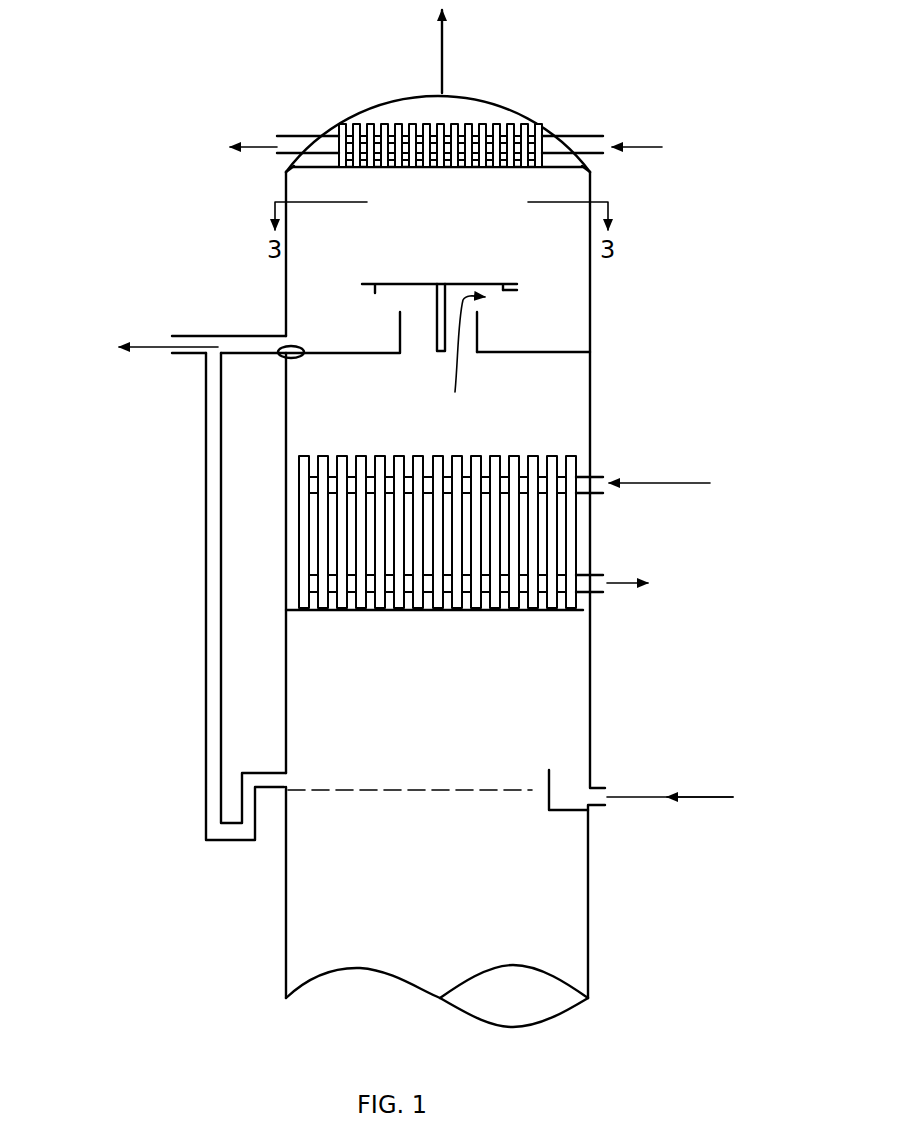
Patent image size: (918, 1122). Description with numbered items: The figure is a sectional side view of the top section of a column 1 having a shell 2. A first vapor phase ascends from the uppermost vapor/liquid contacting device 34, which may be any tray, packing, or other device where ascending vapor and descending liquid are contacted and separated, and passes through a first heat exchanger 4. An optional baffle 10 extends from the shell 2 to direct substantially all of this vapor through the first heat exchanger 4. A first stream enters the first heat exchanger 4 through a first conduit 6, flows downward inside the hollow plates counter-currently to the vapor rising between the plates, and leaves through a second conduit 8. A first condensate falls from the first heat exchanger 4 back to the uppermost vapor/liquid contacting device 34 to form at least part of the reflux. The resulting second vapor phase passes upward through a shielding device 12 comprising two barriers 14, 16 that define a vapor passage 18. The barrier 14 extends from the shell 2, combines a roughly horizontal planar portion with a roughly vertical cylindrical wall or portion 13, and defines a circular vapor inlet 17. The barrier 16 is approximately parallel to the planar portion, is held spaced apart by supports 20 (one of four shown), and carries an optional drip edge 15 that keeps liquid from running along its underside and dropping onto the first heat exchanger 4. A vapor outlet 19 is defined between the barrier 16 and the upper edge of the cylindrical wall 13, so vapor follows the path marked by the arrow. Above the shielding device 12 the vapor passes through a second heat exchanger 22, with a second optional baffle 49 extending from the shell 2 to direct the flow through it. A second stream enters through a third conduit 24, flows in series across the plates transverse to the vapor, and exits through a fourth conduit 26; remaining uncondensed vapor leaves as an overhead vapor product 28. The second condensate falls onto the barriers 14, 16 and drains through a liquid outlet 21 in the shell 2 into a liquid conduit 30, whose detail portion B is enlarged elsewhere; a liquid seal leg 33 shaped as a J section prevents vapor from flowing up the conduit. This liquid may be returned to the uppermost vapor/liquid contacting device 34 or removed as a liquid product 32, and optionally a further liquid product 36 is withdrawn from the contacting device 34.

The column 1 is at (672, 852).
The shell 2 is at (588, 897).
The first heat exchanger 4 is at (502, 640).
The first conduit 6 is at (598, 475).
The second conduit 8 is at (598, 573).
The baffle 10 is at (287, 608).
The shielding device 12 is at (609, 325).
The cylindrical wall or portion 13 is at (400, 317).
The barrier 14 is at (547, 352).
The drip edge 15 is at (510, 290).
The barrier 16 is at (457, 283).
The vapor inlet 17 is at (468, 353).
The vapor passage 18 is at (427, 337).
The vapor outlet 19 is at (478, 305).
The supports 20 is at (433, 297).
The liquid outlet 21 is at (303, 347).
The second heat exchanger 22 is at (442, 113).
The third conduit 24 is at (585, 137).
The fourth conduit 26 is at (298, 137).
The overhead vapor product 28 is at (442, 58).
The liquid conduit 30 is at (253, 347).
The liquid product 32 is at (158, 350).
The liquid seal leg 33 is at (185, 800).
The uppermost vapor/liquid contacting device 34 is at (327, 790).
The liquid product 36 is at (627, 797).
The second optional baffle 49 is at (317, 169).
The portion B is at (283, 360).